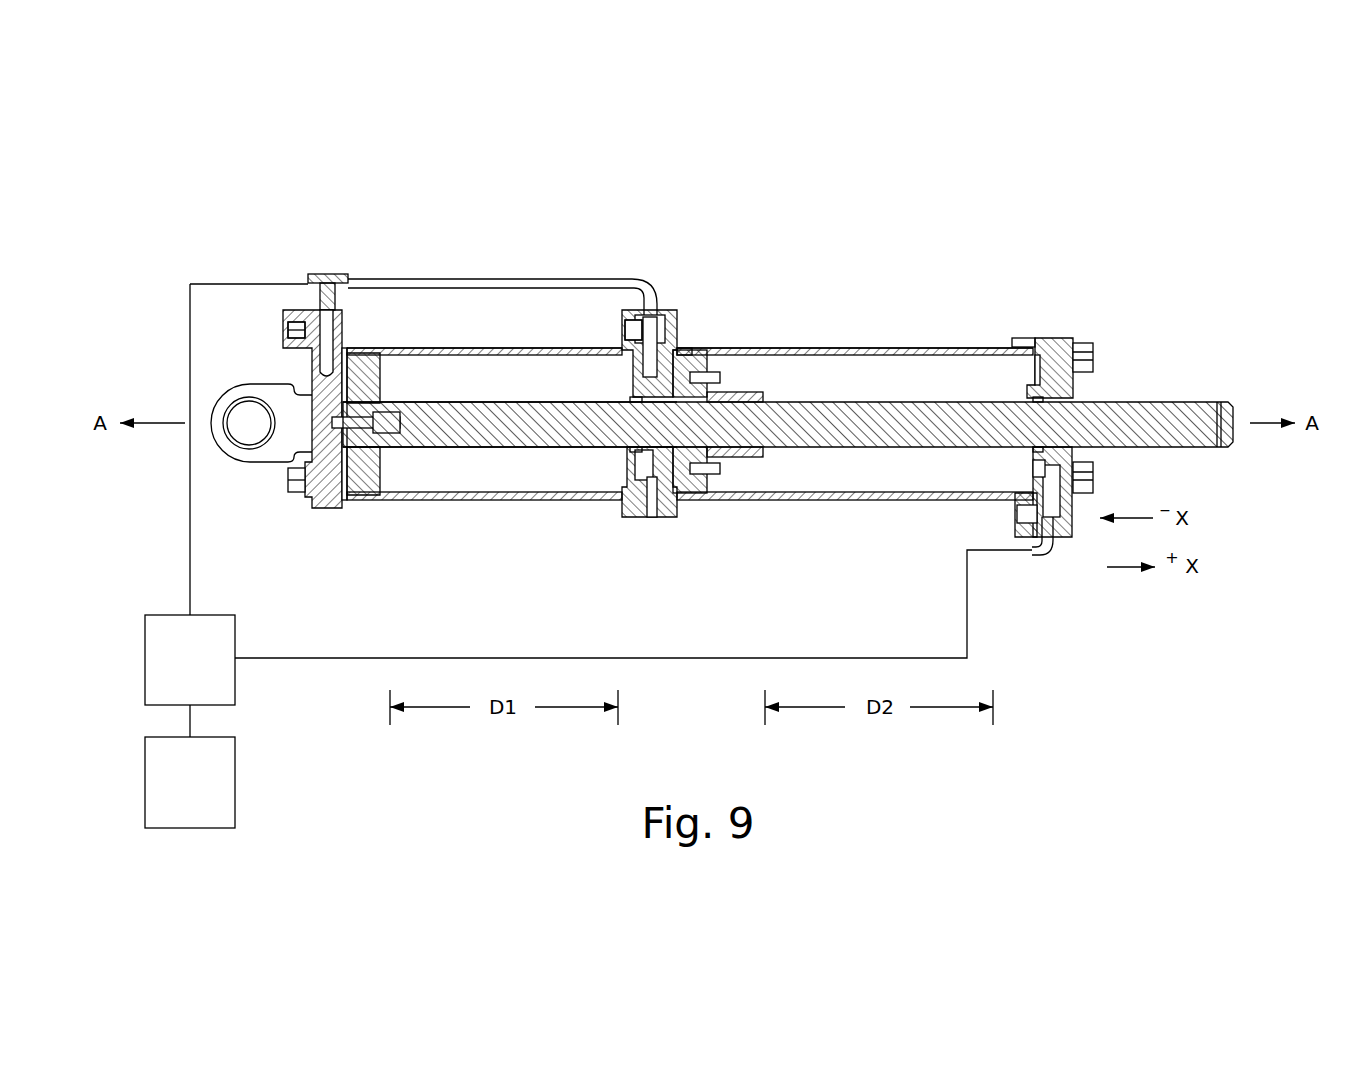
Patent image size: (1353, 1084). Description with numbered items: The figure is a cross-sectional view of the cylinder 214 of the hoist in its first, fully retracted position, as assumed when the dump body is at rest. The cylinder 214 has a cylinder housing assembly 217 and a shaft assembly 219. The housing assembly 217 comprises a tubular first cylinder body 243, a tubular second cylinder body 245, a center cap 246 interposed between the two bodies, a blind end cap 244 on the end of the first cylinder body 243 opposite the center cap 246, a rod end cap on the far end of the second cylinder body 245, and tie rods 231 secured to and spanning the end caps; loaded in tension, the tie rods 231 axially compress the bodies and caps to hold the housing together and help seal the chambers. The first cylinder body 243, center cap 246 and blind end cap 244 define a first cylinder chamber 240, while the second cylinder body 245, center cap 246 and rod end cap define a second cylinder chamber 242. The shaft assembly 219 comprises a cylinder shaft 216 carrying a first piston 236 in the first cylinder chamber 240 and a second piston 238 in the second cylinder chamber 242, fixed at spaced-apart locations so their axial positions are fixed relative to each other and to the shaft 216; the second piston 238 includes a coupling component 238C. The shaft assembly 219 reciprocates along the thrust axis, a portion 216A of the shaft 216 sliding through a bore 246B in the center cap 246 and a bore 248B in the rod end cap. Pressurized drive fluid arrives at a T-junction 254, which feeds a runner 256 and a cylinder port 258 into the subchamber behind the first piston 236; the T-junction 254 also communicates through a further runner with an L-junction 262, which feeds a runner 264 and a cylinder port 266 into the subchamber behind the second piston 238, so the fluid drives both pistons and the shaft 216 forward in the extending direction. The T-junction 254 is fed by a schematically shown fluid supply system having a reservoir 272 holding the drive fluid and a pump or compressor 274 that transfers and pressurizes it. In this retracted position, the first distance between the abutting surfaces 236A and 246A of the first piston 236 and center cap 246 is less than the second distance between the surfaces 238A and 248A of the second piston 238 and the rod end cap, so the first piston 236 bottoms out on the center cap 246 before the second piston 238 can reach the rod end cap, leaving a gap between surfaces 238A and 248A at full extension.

The cylinder 214 is at (895, 168).
The cylinder shaft 216 is at (932, 408).
The first rod portion 216A is at (522, 400).
The cylinder housing assembly 217 is at (729, 507).
The shaft assembly 219 is at (561, 397).
The tie rods 231 is at (1085, 340).
The first piston 236 is at (342, 508).
The surface of first piston 236A is at (387, 453).
The second piston 238 is at (708, 483).
The surface of second piston 238A is at (763, 449).
The coupling component 238C is at (747, 455).
The first cylinder chamber 240 is at (420, 385).
The second cylinder chamber 242 is at (758, 380).
The first cylinder body 243 is at (480, 348).
The blind end cap 244 is at (325, 492).
The second cylinder body 245 is at (900, 348).
The center cap 246 is at (626, 508).
The surface of center cap 246A is at (625, 448).
The bore in center cap 246B is at (632, 416).
The surface of rod end cap 248A is at (1033, 449).
The bore in rod end cap 248B is at (1050, 414).
The T-junction 254 is at (330, 274).
The runner 256 is at (328, 365).
The cylinder port 258 is at (356, 346).
The L-junction 262 is at (638, 274).
The runner 264 is at (677, 349).
The cylinder port 266 is at (690, 352).
The reservoir 272 is at (173, 791).
The pump or compressor 274 is at (173, 668).